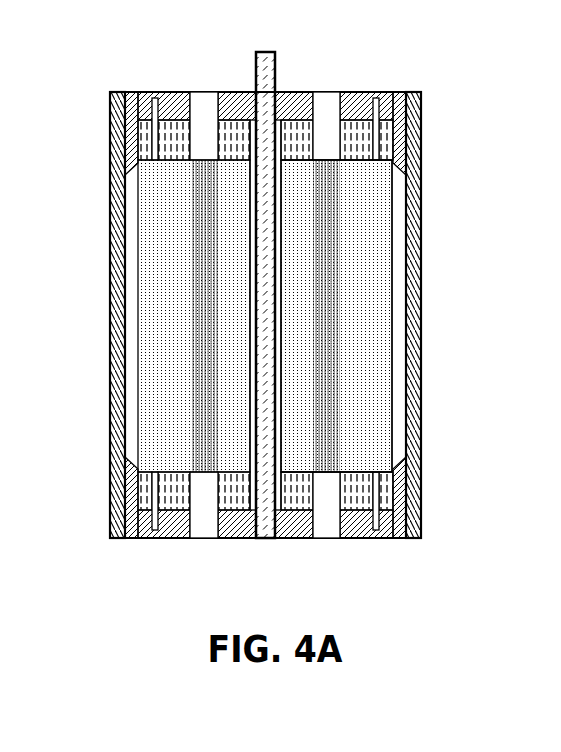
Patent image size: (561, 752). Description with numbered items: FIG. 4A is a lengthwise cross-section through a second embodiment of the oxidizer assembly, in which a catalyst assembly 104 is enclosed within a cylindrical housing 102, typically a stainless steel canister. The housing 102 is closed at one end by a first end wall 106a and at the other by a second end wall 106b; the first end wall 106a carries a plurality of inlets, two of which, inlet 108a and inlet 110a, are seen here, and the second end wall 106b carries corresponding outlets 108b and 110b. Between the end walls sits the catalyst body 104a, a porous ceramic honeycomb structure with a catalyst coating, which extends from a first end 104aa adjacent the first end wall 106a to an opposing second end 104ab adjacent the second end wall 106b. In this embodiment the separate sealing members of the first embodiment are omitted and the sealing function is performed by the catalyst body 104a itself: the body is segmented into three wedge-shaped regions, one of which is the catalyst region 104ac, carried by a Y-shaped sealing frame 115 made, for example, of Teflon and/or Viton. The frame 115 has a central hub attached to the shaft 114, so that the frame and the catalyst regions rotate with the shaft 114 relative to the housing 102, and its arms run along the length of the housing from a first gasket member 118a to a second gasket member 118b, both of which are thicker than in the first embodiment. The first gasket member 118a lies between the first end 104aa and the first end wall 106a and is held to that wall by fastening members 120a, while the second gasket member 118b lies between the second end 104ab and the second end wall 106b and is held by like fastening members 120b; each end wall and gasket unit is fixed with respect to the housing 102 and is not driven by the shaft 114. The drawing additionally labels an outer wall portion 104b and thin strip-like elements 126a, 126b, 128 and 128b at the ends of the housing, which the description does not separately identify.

The housing 102 is at (113, 256).
The catalyst assembly 104 is at (127, 182).
The catalyst body 104a is at (118, 366).
The first end of the catalyst body 104aa is at (393, 163).
The second end of the catalyst body 104ab is at (358, 472).
The catalyst region 104ac is at (377, 417).
The second electrode (outer wall) 104b is at (420, 347).
The first end wall 106a is at (140, 100).
The second end wall 106b is at (130, 518).
The inlet 108a is at (210, 102).
The outlet 108b is at (207, 528).
The inlet 110a is at (325, 138).
The outlet 110b is at (325, 528).
The shaft 114 is at (268, 50).
The sealing frame 115 is at (276, 304).
The first gasket member 118a is at (133, 130).
The second gasket member 118b is at (130, 468).
The fastening members 120a is at (415, 110).
The fastening members 120b is at (382, 520).
The top left terminal strip 126a is at (205, 135).
The bottom left terminal strip 126b is at (205, 493).
The top right terminal strip 128 is at (330, 138).
The bottom right terminal strip 128b is at (325, 490).